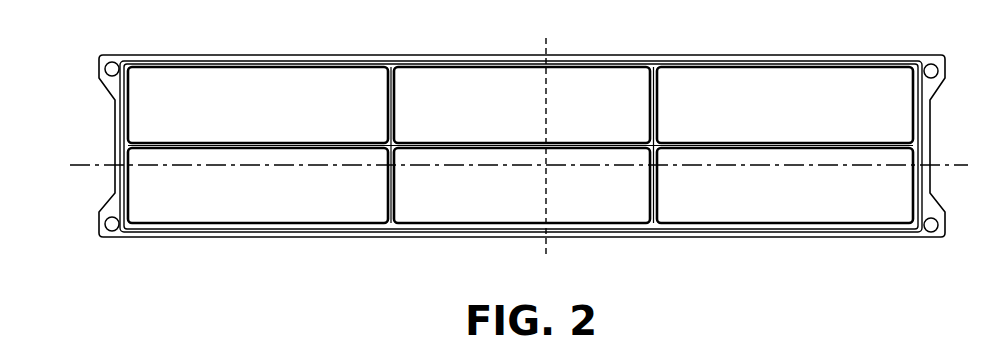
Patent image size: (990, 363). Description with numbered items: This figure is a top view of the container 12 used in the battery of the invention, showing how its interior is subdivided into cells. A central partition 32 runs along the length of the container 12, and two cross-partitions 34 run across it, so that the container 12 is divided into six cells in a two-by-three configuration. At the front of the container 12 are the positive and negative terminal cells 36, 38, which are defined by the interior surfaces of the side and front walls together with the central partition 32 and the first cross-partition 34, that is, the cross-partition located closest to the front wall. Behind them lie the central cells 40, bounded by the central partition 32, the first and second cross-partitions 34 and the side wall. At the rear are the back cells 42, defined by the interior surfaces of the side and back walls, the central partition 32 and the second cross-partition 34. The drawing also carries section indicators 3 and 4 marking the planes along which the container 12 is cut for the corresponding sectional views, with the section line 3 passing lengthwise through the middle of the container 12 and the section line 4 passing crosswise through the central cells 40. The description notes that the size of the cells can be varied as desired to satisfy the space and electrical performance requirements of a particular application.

The container 12 is at (328, 254).
The central partition 32 is at (338, 143).
The cross-partitions 34 is at (398, 101).
The front positive terminal cell 36 is at (258, 185).
The front negative terminal cell 38 is at (258, 105).
The central cells 40 is at (522, 145).
The back cells 42 is at (785, 145).
The section line 3- 3 is at (71, 165).
The section line 4- 4 is at (546, 38).